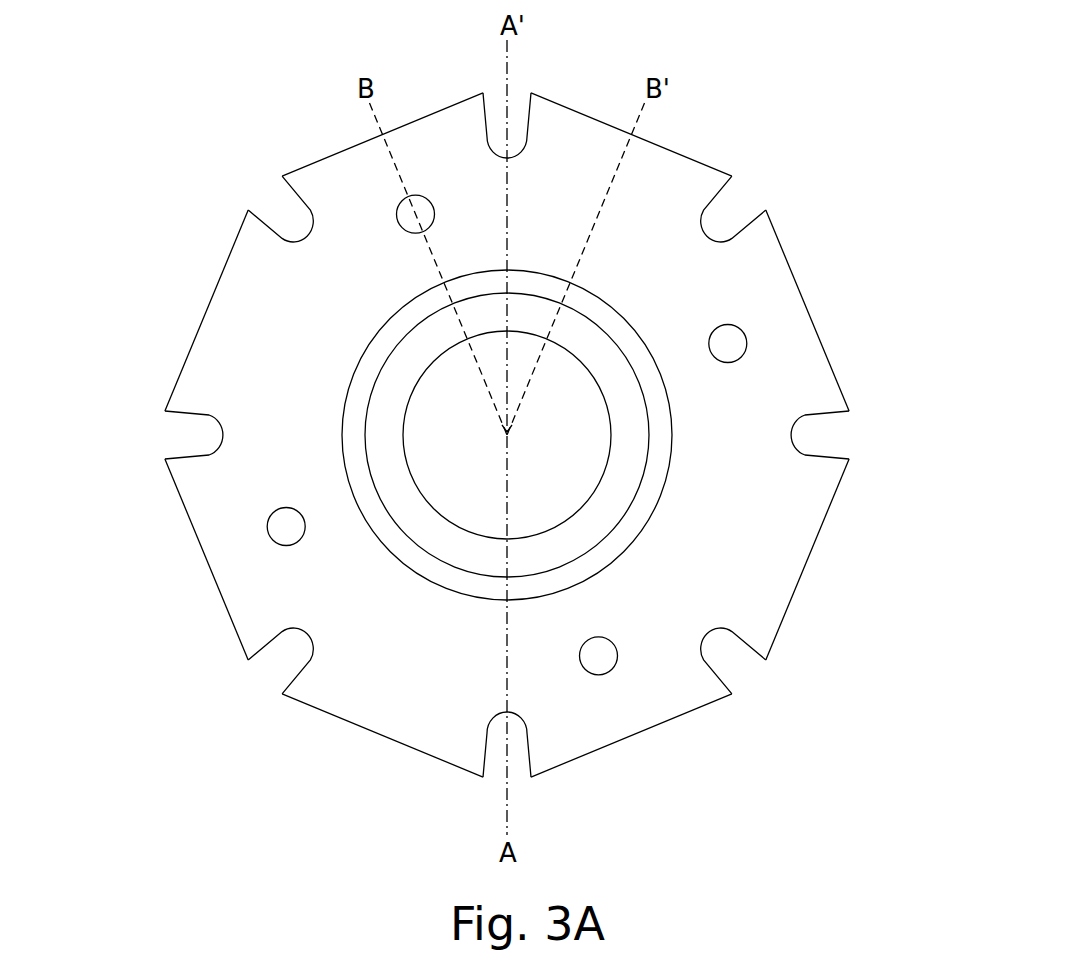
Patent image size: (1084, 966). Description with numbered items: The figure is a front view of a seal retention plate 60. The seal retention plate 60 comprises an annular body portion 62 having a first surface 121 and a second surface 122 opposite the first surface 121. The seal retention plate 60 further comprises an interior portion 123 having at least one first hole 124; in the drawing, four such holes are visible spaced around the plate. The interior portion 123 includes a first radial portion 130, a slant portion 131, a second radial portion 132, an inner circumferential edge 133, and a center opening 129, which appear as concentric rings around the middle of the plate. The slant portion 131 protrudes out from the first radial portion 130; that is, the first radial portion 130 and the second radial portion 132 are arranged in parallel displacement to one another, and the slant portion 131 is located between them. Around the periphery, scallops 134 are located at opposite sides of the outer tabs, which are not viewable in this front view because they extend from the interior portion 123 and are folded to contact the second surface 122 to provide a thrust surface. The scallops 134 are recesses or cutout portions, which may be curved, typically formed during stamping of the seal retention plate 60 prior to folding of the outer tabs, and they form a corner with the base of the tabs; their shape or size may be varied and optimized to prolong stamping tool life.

The seal retention plate 60 is at (160, 222).
The annular body portion 62 is at (785, 215).
The first surface 121 is at (717, 280).
The second surface 122 is at (175, 330).
The interior portion 123 is at (628, 198).
The first hole 124 is at (272, 542).
The center opening 129 is at (570, 505).
The first radial portion 130 is at (377, 600).
The slant portion 131 is at (435, 568).
The second radial portion 132 is at (492, 562).
The inner circumferential edge 133 is at (608, 415).
The scallops 134 is at (303, 242).